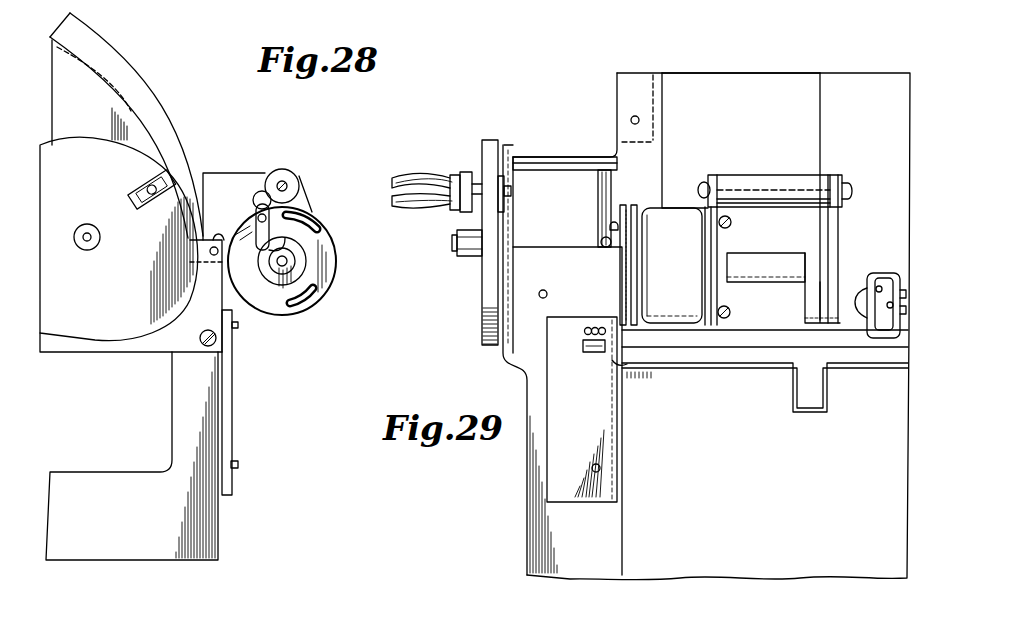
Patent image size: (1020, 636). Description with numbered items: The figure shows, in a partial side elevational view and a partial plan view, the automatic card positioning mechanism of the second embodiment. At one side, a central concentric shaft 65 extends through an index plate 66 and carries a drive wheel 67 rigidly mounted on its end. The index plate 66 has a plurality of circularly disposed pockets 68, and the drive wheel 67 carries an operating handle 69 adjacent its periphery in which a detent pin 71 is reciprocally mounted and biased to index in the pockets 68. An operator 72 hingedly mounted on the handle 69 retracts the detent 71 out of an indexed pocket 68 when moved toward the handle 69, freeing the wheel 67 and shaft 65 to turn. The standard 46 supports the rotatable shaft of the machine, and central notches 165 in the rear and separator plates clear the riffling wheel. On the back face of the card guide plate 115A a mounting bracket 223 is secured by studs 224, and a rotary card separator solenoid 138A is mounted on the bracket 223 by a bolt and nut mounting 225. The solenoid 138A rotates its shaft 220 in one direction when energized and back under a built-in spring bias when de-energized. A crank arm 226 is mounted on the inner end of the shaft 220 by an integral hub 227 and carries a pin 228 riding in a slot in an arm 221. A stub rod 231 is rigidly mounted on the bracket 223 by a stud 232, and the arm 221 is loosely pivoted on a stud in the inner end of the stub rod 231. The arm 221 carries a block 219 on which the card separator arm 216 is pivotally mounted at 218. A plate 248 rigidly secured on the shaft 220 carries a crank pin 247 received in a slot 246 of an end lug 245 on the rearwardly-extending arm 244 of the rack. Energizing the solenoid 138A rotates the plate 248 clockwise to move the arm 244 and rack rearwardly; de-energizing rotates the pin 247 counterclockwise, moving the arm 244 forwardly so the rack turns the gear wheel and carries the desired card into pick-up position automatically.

In FIG. 29, the standard 46 is at (525, 373).
In FIG. 28, the central concentric shaft 65 is at (97, 238).
In FIG. 29, the index plate 66 is at (503, 346).
In FIG. 28, the drive wheel 67 is at (88, 300).
In FIG. 29, the drive wheel 67 is at (482, 308).
In FIG. 29, the pockets 68 is at (513, 193).
In FIG. 29, the operating handle 69 is at (410, 188).
In FIG. 29, the detent pin 71 is at (505, 193).
In FIG. 29, the operator 72 is at (412, 208).
In FIG. 29, the card guide plate 115A is at (765, 115).
In FIG. 28, the card separator solenoid 138A is at (334, 272).
In FIG. 29, the card separator solenoid 138A is at (698, 248).
In FIG. 29, the central notches 165 is at (795, 406).
In FIG. 29, the card separator arm 216 is at (869, 335).
In FIG. 29, the pivot 218 is at (867, 298).
In FIG. 29, the block 219 is at (888, 322).
In FIG. 28, the shaft 220 is at (282, 263).
In FIG. 29, the shaft 220 is at (717, 279).
In FIG. 29, the arm 221 is at (838, 240).
In FIG. 29, the mounting bracket 223 is at (716, 188).
In FIG. 29, the studs 224 is at (732, 223).
In FIG. 29, the bolt and nut mounting 225 is at (714, 241).
In FIG. 29, the crank arm 226 is at (803, 309).
In FIG. 29, the integral hub 227 is at (758, 257).
In FIG. 29, the pin 228 is at (828, 316).
In FIG. 29, the stub rod 231 is at (768, 177).
In FIG. 29, the stud 232 is at (700, 185).
In FIG. 28, the arm 244 is at (222, 277).
In FIG. 28, the end lug 245 is at (250, 208).
In FIG. 29, the end lug 245 is at (614, 253).
In FIG. 28, the slot 246 is at (250, 240).
In FIG. 28, the pin 247 is at (298, 210).
In FIG. 29, the pin 247 is at (616, 228).
In FIG. 28, the plate 248 is at (303, 228).
In FIG. 29, the plate 248 is at (633, 280).